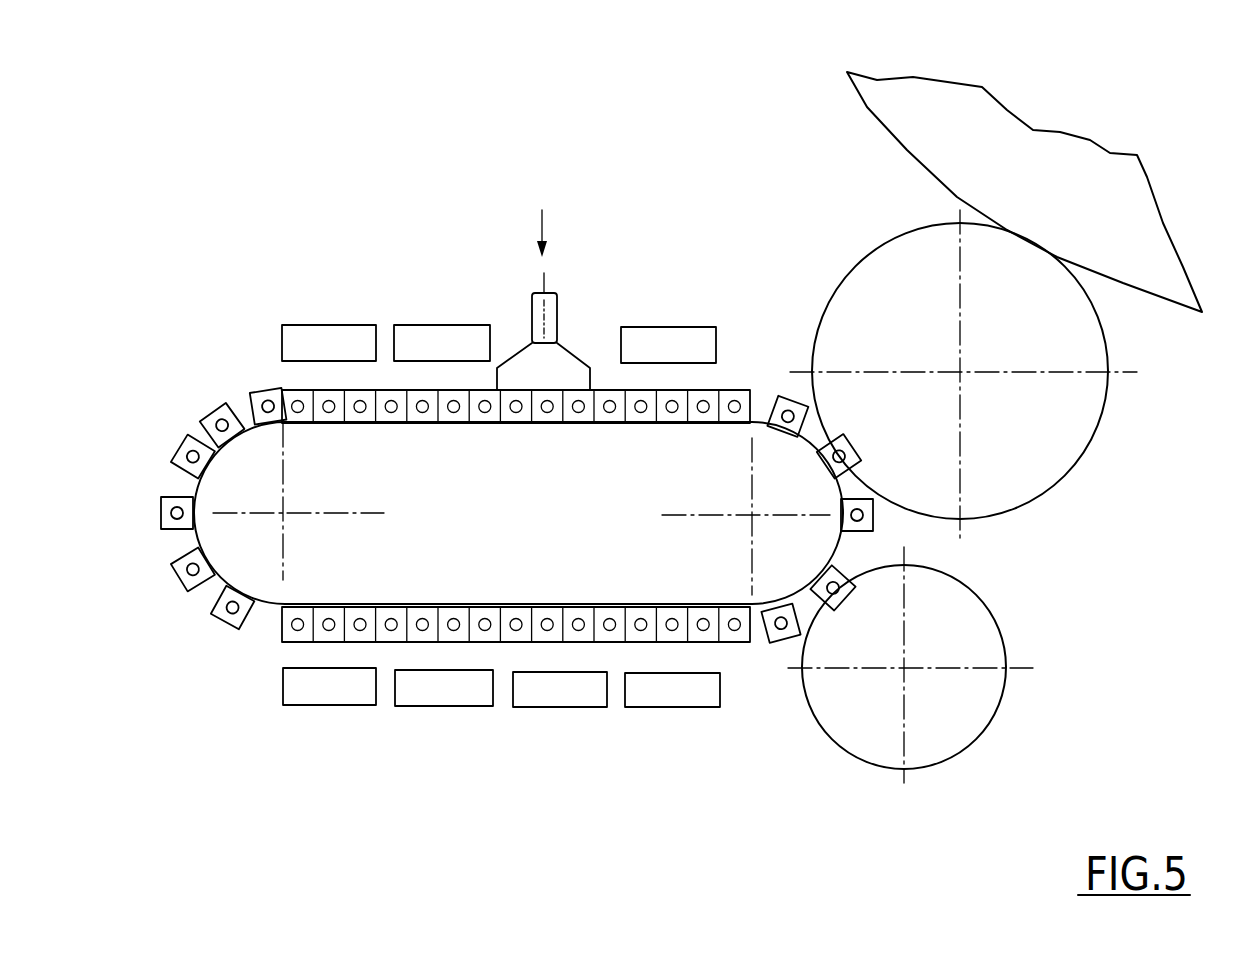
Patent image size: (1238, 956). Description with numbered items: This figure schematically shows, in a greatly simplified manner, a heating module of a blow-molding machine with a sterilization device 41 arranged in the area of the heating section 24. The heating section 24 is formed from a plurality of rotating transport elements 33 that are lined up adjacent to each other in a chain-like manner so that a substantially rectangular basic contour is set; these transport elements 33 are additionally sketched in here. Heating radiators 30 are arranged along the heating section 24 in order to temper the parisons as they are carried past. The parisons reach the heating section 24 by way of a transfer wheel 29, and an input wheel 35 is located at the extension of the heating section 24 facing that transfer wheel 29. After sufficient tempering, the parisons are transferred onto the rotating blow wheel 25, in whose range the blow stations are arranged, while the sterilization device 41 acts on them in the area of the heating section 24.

The heating section 24 is at (204, 438).
The blow wheel 25 is at (1088, 168).
The transfer wheel 29 is at (868, 737).
The heating radiators 30 is at (327, 327).
The transport elements 33 is at (177, 584).
The input wheel 35 is at (1052, 427).
The sterilization device 41 is at (509, 272).